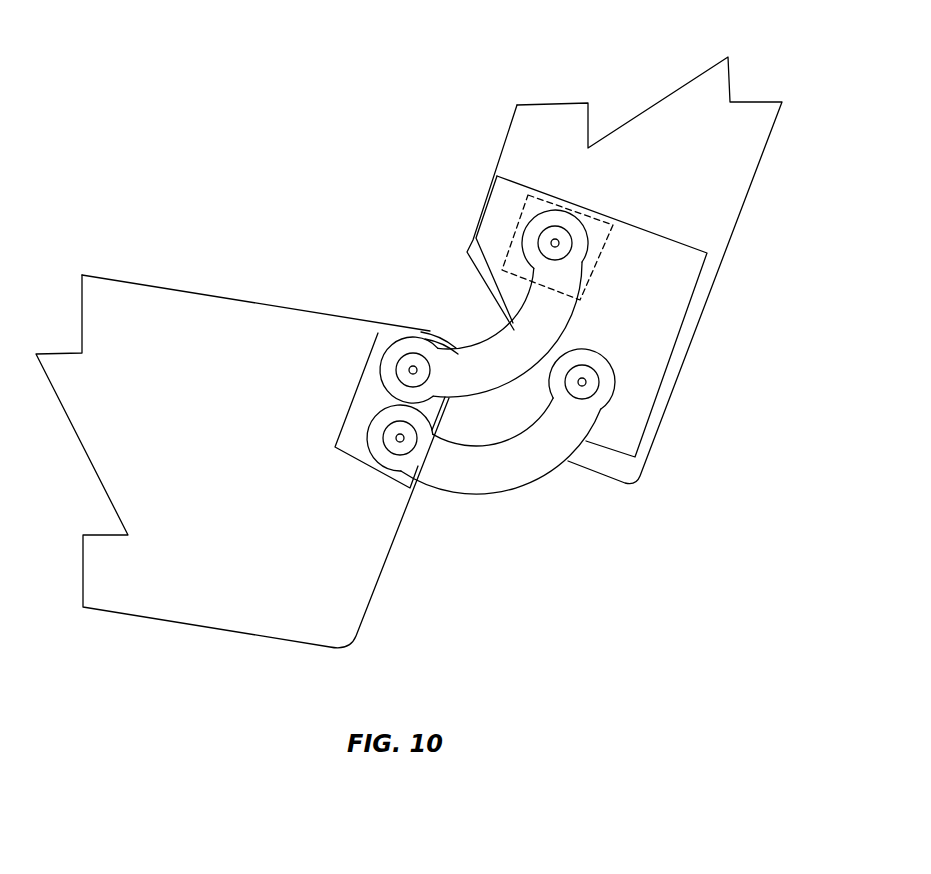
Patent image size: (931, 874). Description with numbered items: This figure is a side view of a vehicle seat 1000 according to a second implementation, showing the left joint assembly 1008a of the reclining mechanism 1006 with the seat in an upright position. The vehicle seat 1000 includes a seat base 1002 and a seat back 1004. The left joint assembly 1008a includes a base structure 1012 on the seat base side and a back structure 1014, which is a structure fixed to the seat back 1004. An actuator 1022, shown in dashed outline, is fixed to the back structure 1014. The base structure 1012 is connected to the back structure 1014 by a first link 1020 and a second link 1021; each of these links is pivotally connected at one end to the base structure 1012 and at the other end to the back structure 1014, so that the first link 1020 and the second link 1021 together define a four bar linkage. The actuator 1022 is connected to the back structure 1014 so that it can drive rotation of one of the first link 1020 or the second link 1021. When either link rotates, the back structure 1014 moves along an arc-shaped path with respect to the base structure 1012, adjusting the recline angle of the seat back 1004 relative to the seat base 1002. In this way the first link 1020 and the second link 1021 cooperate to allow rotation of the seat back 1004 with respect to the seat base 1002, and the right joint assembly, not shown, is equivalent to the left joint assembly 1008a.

The vehicle seat 1000 is at (277, 120).
The seat base 1002 is at (180, 292).
The seat back 1004 is at (516, 128).
The reclining mechanism 1006 is at (300, 252).
The left joint assembly 1008a is at (408, 252).
The base structure 1012 is at (348, 422).
The back structure 1014 is at (677, 345).
The first link 1020 is at (463, 332).
The second link 1021 is at (540, 477).
The actuator 1022 is at (517, 222).